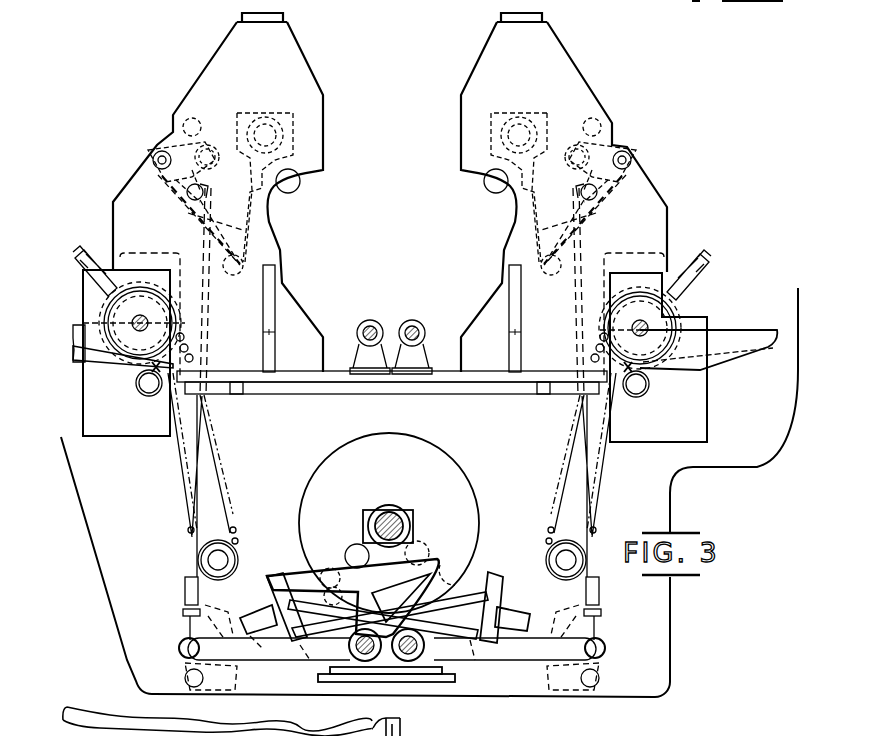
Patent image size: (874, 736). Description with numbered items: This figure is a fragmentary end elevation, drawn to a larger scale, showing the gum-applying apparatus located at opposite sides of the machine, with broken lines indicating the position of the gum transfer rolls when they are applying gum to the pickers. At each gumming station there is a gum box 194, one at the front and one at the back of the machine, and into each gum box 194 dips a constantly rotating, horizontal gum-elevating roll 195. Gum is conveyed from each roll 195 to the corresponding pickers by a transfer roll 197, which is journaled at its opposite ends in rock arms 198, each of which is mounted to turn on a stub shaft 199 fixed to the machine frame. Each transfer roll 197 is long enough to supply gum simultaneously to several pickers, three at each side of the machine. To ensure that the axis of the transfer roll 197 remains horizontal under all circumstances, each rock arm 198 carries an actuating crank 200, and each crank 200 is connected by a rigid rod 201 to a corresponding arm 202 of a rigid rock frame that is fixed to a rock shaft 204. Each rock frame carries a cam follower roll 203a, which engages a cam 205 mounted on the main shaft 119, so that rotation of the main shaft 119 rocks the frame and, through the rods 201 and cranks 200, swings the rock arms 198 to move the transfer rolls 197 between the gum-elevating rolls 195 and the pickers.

The main shaft 119 is at (400, 512).
The gum box 194 is at (72, 348).
The gum-elevating roll 195 is at (137, 300).
The transfer roll 197 is at (243, 275).
The rock arm 198 is at (190, 215).
The stub shaft 199 is at (152, 153).
The actuating crank 200 is at (170, 136).
The rigid rod 201 is at (616, 247).
The arm of rock frame 202 is at (255, 653).
The cam follower roll 203a is at (327, 578).
The rock shaft 204 is at (312, 578).
The cam 205 is at (440, 466).